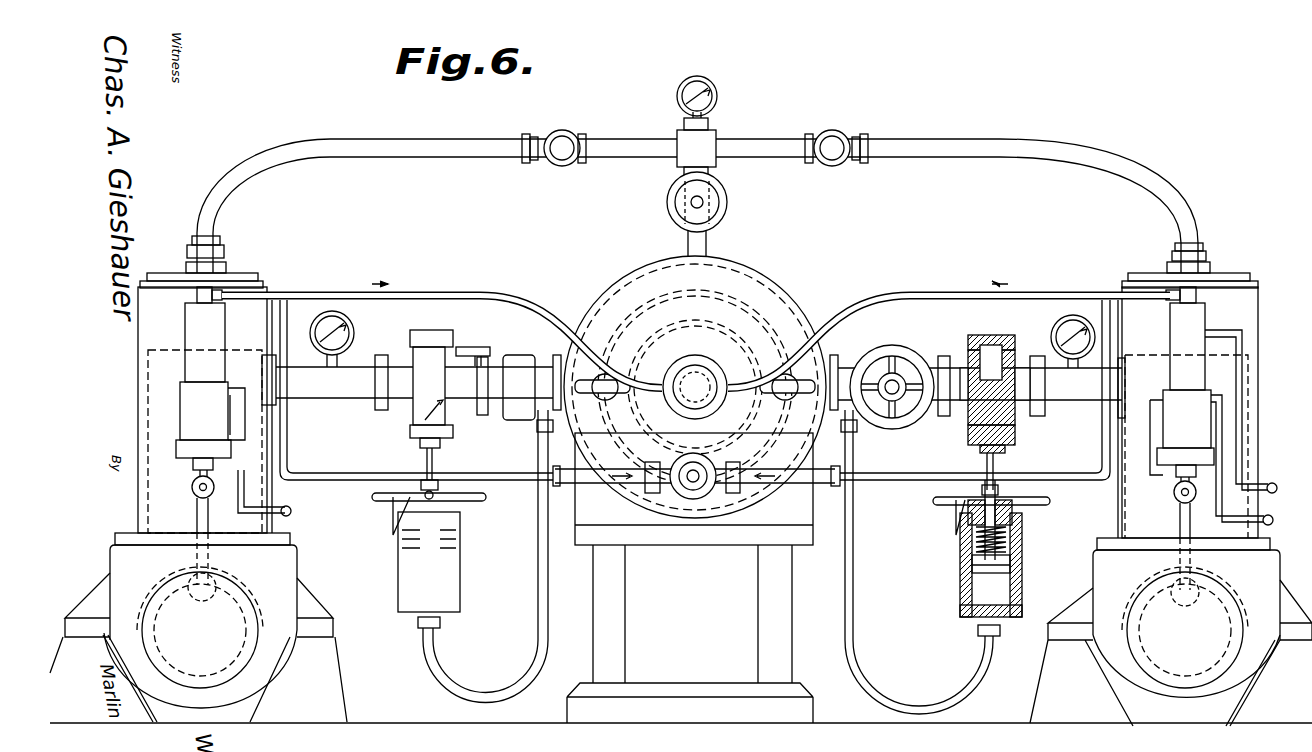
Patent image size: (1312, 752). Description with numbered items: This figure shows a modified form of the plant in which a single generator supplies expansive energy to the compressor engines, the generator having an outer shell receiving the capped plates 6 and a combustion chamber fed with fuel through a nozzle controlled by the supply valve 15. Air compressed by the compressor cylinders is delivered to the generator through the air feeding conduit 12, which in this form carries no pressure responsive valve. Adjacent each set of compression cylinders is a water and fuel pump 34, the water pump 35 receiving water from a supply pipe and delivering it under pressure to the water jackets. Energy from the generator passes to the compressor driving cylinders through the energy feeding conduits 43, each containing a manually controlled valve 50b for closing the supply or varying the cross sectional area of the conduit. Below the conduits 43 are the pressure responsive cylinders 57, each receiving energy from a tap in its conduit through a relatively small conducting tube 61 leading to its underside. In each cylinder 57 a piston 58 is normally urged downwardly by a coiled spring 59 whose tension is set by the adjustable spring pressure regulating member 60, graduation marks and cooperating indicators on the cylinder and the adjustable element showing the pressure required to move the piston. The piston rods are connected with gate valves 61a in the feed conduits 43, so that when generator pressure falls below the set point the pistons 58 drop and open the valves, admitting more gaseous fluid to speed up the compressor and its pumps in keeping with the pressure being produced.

The capped plates 6 is at (746, 280).
The air feeding conduit 12 is at (772, 140).
The supply valve 15 is at (698, 356).
The water and fuel pump 34 is at (188, 336).
The water pump 35 is at (186, 425).
The energy feeding conduit 43 is at (336, 400).
The manually controlled valve 50b is at (894, 384).
The pressure responsive cylinder 57 is at (455, 568).
The piston 58 is at (975, 590).
The coiled spring 59 is at (975, 550).
The spring pressure regulating member 60 is at (470, 506).
The conducting tube 61 is at (852, 464).
The gate valve 61a is at (1030, 330).